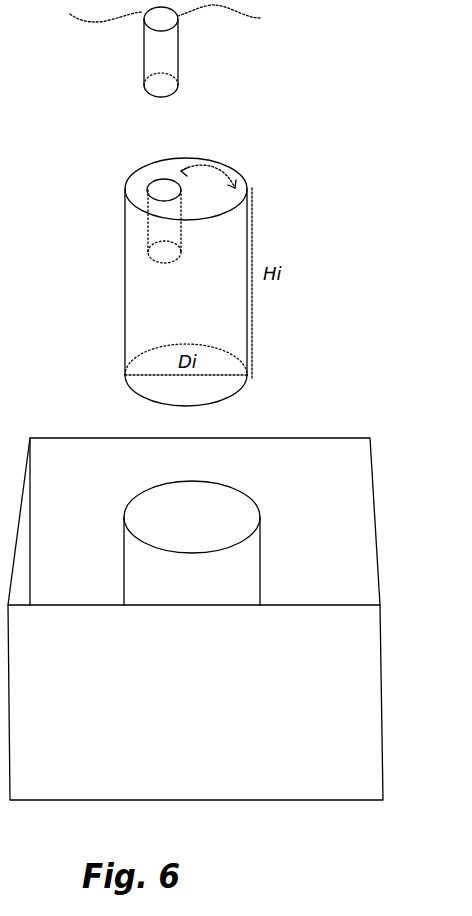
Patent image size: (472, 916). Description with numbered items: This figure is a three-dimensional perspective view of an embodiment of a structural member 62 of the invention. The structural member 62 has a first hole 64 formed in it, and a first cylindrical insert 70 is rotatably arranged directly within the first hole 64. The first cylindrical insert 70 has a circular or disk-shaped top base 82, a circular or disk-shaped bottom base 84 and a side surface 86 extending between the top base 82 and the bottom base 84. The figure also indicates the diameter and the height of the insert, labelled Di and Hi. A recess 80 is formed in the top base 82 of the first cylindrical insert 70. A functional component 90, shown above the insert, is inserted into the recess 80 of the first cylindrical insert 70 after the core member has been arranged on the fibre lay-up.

The structural member 62 is at (330, 447).
The first hole 64 is at (220, 517).
The first cylindrical insert 70 is at (137, 313).
The recess 80 is at (164, 190).
The top base 82 is at (140, 182).
The bottom base 84 is at (220, 388).
The side surface 86 is at (197, 317).
The functional component 90 is at (153, 52).